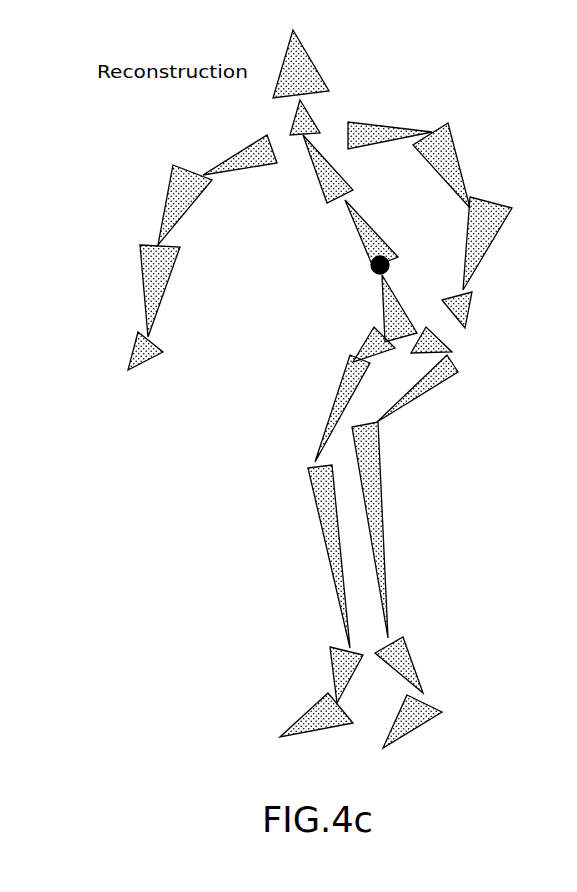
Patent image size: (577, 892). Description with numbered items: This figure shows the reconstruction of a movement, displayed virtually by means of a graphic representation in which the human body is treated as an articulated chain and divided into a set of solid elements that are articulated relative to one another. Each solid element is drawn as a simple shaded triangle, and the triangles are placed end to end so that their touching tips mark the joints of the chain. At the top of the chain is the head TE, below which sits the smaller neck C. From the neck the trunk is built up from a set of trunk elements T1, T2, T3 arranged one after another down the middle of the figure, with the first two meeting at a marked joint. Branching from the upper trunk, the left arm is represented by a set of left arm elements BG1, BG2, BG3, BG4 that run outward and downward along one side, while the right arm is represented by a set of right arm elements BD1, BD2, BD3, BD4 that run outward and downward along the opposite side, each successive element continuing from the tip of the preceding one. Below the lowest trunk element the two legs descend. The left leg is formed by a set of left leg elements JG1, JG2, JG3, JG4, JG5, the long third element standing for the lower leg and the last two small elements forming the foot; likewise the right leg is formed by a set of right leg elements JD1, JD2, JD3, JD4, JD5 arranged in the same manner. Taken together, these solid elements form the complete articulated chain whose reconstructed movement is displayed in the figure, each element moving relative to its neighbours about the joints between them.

The head TE is at (300, 45).
The neck C is at (297, 117).
The trunk element T1 is at (325, 182).
The trunk element T2 is at (358, 243).
The trunk element T3 is at (385, 300).
The right arm element BD1 is at (235, 150).
The right arm element BD2 is at (173, 205).
The right arm element BD3 is at (148, 285).
The right arm element BD4 is at (140, 347).
The left arm element BG1 is at (378, 118).
The left arm element BG2 is at (462, 145).
The left arm element BG3 is at (492, 212).
The left arm element BG4 is at (470, 313).
The right leg element JD1 is at (365, 339).
The right leg element JD2 is at (340, 398).
The right leg element JD3 is at (322, 533).
The right leg element JD4 is at (333, 667).
The right leg element JD5 is at (308, 718).
The left leg element JG1 is at (443, 342).
The left leg element JG2 is at (420, 390).
The left leg element JG3 is at (382, 518).
The left leg element JG4 is at (407, 652).
The left leg element JG5 is at (417, 726).